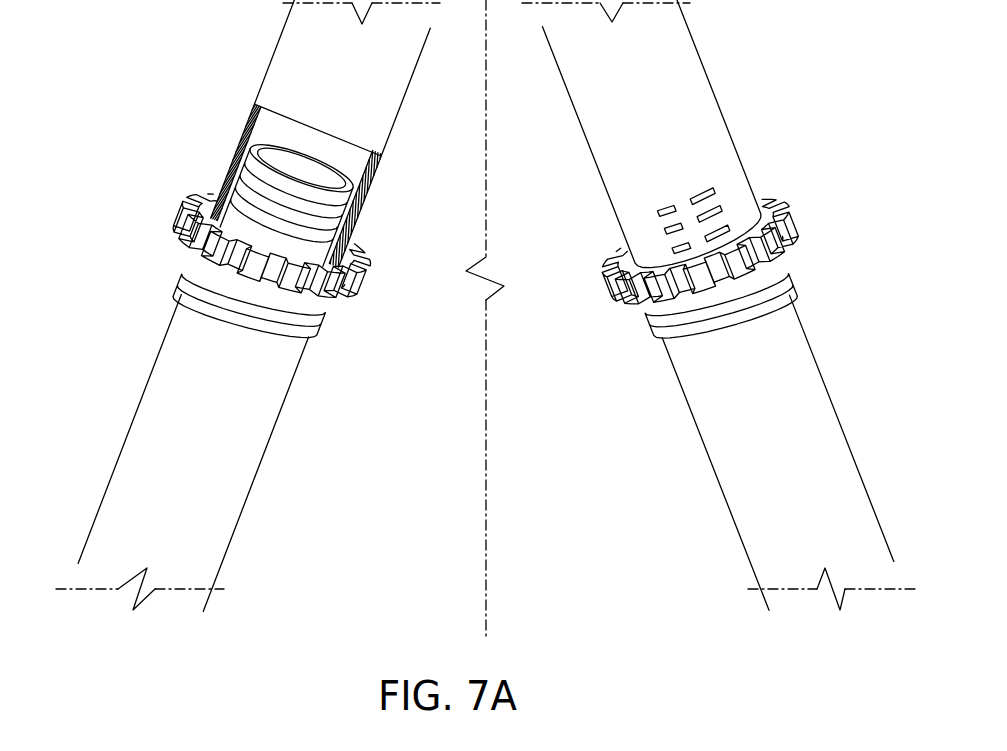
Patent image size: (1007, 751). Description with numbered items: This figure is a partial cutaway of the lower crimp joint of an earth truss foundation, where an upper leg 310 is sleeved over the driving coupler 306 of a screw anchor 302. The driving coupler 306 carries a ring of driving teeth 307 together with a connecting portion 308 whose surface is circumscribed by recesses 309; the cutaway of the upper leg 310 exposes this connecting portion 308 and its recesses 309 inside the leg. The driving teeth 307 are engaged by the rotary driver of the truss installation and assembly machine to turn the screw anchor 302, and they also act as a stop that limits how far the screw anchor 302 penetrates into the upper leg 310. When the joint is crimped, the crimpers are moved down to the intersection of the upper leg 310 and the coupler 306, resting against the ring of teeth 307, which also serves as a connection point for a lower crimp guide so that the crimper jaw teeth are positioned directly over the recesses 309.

The screw anchor 302 is at (123, 440).
The driving coupler 306 is at (340, 352).
The driving teeth 307 is at (180, 222).
The connecting portion 308 is at (357, 200).
The recesses 309 is at (332, 248).
The upper leg 310 is at (268, 58).